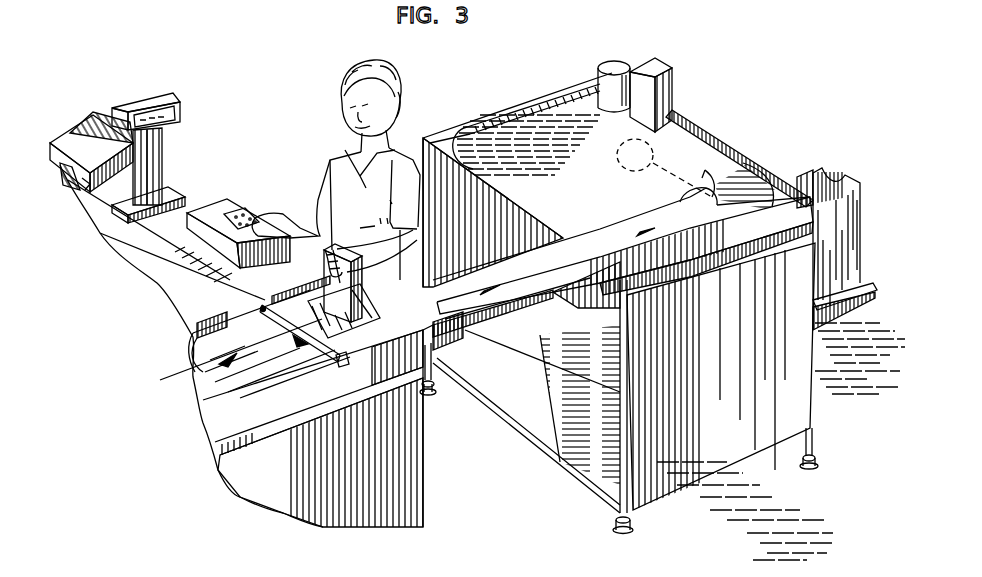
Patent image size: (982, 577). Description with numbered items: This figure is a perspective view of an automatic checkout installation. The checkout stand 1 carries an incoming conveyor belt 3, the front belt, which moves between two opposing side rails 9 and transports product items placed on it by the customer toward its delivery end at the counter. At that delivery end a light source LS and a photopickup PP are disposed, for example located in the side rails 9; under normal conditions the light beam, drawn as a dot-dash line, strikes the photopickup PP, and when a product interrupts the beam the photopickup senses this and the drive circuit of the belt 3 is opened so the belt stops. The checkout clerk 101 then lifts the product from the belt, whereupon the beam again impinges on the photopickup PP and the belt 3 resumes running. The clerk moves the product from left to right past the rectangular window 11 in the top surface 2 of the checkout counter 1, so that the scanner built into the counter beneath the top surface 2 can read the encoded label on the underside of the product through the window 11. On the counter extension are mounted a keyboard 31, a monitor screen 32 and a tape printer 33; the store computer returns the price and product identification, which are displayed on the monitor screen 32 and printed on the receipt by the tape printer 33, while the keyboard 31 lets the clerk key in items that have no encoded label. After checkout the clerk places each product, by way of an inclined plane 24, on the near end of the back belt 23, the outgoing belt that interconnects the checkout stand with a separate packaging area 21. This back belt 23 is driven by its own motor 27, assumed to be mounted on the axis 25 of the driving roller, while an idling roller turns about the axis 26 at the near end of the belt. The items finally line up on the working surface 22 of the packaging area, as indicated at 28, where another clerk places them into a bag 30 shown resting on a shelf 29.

The checkout stand 1 is at (423, 466).
The top surface 2 is at (280, 298).
The incoming conveyor belt 3 is at (210, 385).
The side rails 9 is at (195, 350).
The rectangular window 11 is at (302, 310).
The packaging area 21 is at (813, 368).
The working surface 22 is at (594, 157).
The back belt 23 is at (530, 285).
The inclined plane 24 is at (433, 317).
The driving roller axis 25 is at (714, 206).
The idling roller axis 26 is at (517, 360).
The motor 27 is at (627, 170).
The lined-up items 28 is at (668, 90).
The shelf 29 is at (860, 289).
The bag 30 is at (857, 222).
The keyboard 31 is at (228, 208).
The monitor screen 32 is at (181, 105).
The tape printer 33 is at (65, 138).
The operator 101 is at (303, 265).
The light source LS is at (264, 313).
The photopickup PP is at (329, 366).